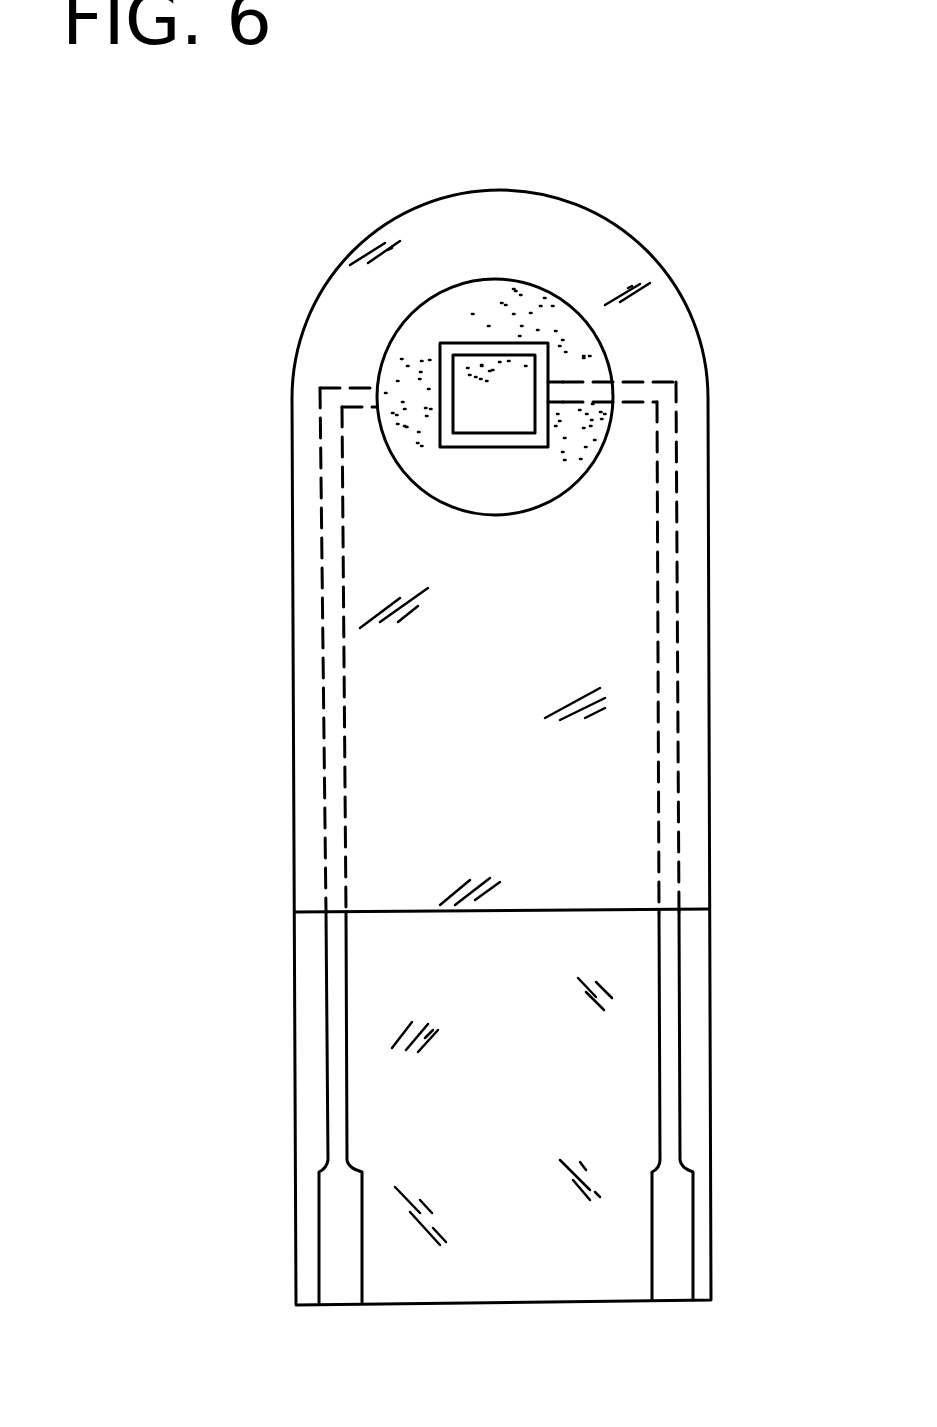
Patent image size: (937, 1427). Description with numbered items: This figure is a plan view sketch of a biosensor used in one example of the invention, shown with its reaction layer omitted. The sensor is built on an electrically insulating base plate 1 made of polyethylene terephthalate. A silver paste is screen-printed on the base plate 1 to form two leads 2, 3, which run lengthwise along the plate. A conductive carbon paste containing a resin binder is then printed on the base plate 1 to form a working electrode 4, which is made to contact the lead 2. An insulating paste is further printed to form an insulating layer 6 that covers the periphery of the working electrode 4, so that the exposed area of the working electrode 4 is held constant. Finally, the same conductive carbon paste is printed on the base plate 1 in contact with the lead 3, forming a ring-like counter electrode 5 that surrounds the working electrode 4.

The base plate 1 is at (535, 1120).
The lead 2 is at (673, 1234).
The lead 3 is at (337, 1233).
The working electrode 4 is at (478, 393).
The counter electrode 5 is at (518, 310).
The insulating layer 6 is at (543, 695).